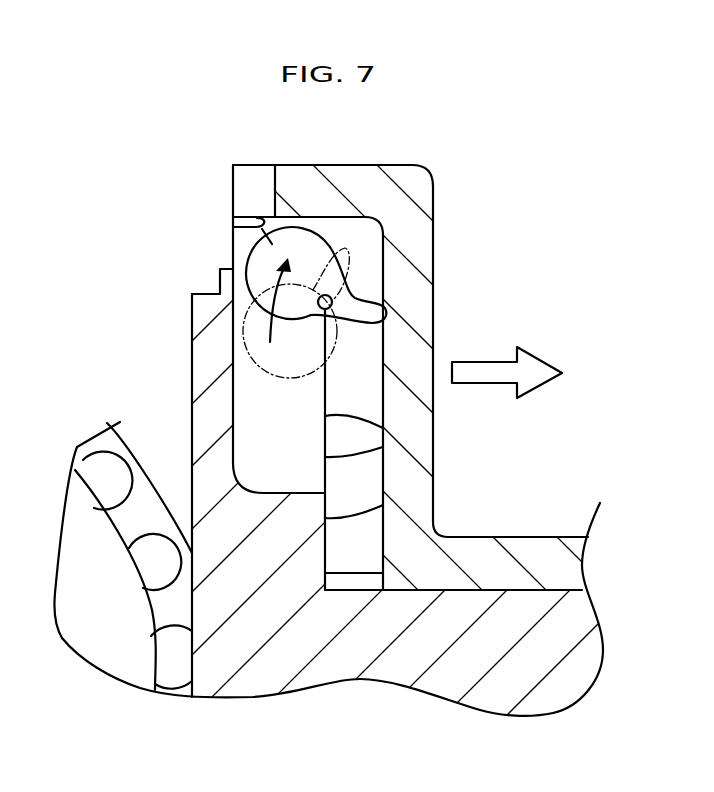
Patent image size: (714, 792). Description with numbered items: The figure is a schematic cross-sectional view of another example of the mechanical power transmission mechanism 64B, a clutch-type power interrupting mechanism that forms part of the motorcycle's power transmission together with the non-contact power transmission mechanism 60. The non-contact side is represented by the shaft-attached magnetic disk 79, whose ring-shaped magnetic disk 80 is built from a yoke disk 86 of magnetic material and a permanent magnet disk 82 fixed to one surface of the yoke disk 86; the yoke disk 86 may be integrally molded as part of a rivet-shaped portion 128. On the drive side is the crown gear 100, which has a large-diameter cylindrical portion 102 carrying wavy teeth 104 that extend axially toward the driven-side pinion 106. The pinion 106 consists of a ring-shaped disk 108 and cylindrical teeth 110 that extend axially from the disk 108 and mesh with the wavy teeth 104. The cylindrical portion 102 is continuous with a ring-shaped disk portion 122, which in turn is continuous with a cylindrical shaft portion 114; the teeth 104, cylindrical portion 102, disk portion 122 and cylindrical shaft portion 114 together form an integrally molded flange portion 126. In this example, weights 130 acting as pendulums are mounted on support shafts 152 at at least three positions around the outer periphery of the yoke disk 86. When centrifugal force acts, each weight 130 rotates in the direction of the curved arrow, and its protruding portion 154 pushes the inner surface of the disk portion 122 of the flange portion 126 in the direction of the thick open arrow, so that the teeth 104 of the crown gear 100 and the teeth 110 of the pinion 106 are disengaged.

The non-contact power transmission mechanism 60 is at (481, 137).
The mechanical power transmission mechanism 64B is at (559, 257).
The shaft-attached magnetic disk 79 is at (357, 455).
The magnetic disk 80 is at (207, 291).
The permanent magnet disk 82 is at (192, 318).
The yoke disk 86 is at (242, 577).
The crown gear 100 is at (248, 361).
The large-diameter cylindrical portion 102 is at (293, 178).
The wavy teeth 104 is at (222, 212).
The pinion 106 is at (121, 511).
The ring-shaped disk 108 is at (93, 467).
The cylindrical teeth 110 is at (143, 487).
The cylindrical shaft portion 114 is at (512, 535).
The disk portion 122 is at (420, 424).
The flange portion 126 is at (437, 465).
The rivet-shaped portion 128 is at (462, 660).
The weight 130 is at (375, 269).
The support shaft 152 is at (333, 299).
The protruding portion 154 is at (372, 313).